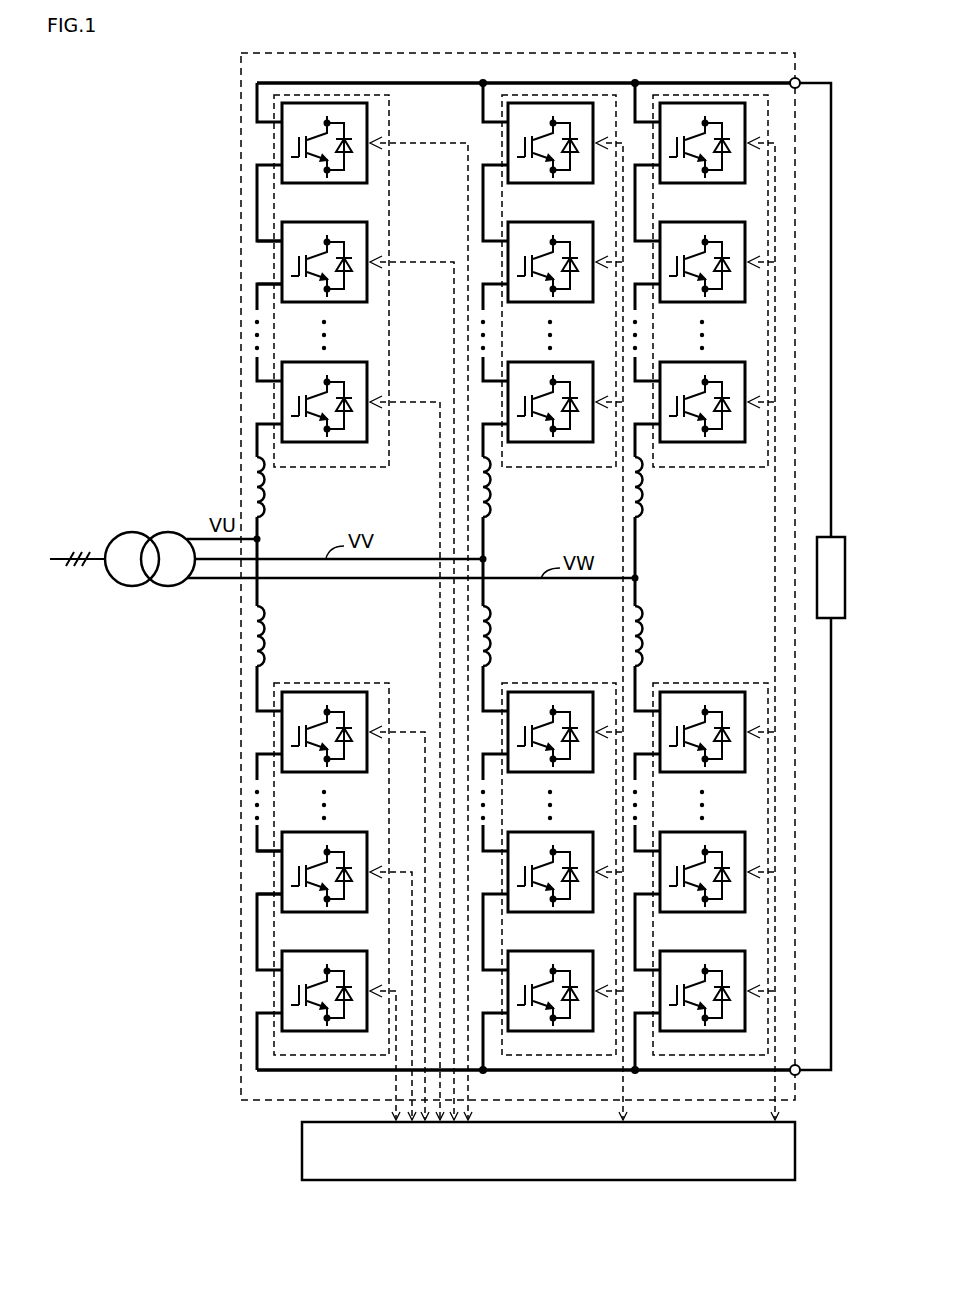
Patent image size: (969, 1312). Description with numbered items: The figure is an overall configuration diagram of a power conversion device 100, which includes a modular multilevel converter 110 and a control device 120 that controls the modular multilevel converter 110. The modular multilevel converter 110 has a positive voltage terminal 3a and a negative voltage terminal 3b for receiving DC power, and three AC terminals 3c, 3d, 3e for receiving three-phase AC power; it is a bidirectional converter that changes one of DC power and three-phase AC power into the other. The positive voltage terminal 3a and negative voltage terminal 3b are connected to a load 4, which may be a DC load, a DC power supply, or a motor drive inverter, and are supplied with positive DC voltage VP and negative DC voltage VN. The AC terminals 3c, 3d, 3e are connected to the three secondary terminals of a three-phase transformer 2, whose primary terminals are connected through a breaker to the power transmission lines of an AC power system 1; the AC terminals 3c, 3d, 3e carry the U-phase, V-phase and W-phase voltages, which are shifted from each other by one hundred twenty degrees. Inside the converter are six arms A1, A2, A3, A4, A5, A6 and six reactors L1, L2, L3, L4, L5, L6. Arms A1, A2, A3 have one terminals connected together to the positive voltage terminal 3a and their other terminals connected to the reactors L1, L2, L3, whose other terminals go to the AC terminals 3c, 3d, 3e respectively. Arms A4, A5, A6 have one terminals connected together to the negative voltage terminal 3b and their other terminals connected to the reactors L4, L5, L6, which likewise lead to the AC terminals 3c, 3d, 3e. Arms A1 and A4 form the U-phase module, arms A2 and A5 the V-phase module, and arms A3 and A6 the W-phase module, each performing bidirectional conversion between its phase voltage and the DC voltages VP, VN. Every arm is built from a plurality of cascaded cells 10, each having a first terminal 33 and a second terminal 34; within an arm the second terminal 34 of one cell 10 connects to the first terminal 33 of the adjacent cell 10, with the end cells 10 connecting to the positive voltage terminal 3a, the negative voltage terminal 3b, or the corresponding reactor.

The AC power system 1 is at (70, 557).
The three-phase transformer 2 is at (139, 532).
The positive voltage terminal 3a is at (800, 79).
The negative voltage terminal 3b is at (800, 1075).
The AC terminal 3c is at (197, 537).
The AC terminal 3d is at (206, 565).
The AC terminal 3e is at (232, 582).
The load 4 is at (846, 578).
The cell 10 is at (521, 580).
The first terminal 33 is at (282, 241).
The second terminal 34 is at (282, 284).
The power conversion device 100 is at (182, 105).
The modular multilevel converter 110 is at (241, 144).
The control device 120 is at (730, 1180).
The arm A1 is at (363, 468).
The arm A2 is at (590, 468).
The arm A3 is at (745, 468).
The arm A4 is at (370, 683).
The arm A5 is at (597, 683).
The arm A6 is at (752, 683).
The reactor L1 is at (266, 488).
The reactor L2 is at (492, 488).
The reactor L3 is at (644, 488).
The reactor L4 is at (266, 638).
The reactor L5 is at (492, 638).
The reactor L6 is at (644, 638).
The positive DC voltage VP is at (706, 83).
The negative DC voltage VN is at (703, 1070).